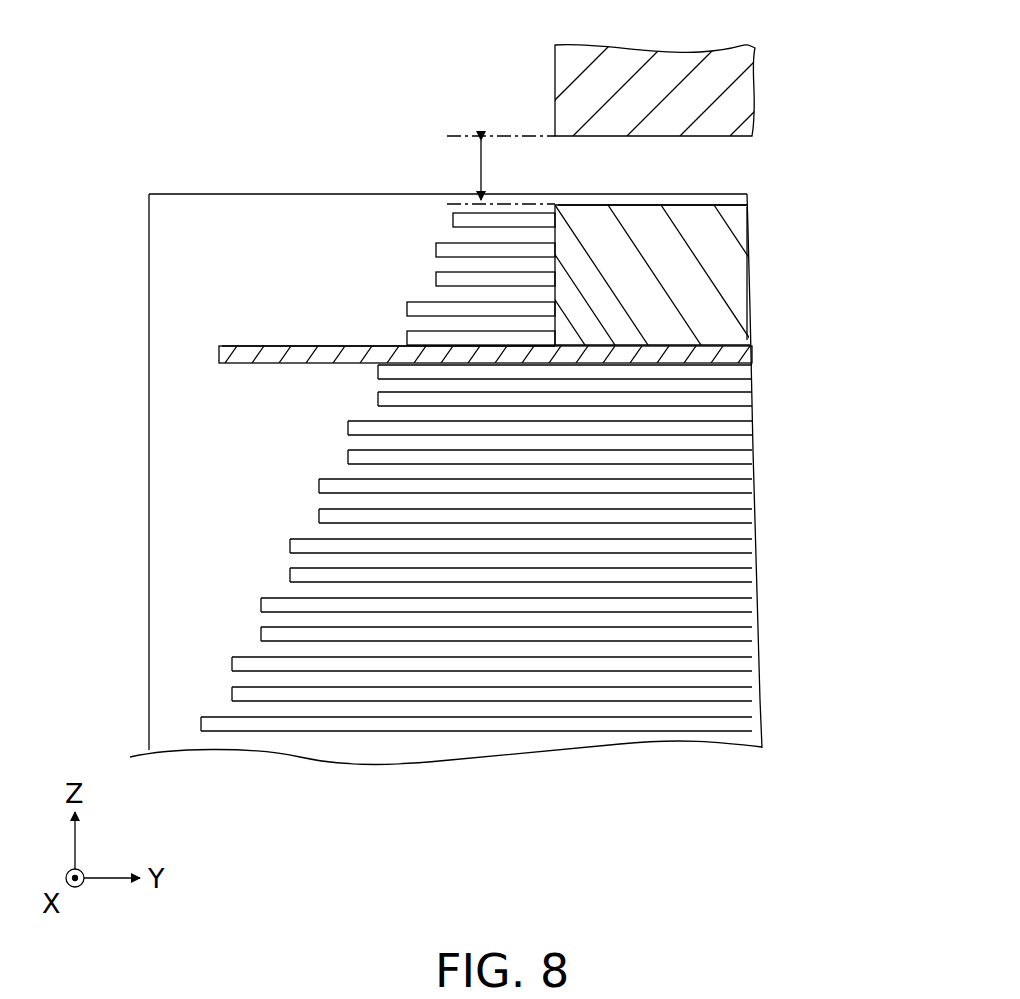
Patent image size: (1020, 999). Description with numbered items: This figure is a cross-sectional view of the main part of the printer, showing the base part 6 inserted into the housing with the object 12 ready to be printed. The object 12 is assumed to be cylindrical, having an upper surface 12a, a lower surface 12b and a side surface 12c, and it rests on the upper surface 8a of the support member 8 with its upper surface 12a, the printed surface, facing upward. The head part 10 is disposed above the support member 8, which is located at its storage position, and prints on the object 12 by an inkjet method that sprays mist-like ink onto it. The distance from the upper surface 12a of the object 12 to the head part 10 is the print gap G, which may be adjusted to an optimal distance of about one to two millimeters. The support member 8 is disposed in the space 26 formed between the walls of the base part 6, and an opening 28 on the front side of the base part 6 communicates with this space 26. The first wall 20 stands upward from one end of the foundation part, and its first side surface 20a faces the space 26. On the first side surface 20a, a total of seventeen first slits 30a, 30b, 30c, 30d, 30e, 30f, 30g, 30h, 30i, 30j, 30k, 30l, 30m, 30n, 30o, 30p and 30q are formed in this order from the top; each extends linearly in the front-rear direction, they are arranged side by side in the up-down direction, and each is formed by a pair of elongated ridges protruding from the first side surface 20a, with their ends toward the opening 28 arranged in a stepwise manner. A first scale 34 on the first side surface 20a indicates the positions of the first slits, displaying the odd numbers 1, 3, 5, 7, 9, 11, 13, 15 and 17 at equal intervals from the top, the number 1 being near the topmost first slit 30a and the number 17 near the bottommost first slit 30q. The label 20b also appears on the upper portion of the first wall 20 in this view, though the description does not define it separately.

The base part 6 is at (407, 103).
The head part 10 is at (570, 68).
The print gap G is at (501, 170).
The object 12 is at (728, 244).
The upper surface of the object 12a is at (688, 204).
The lower surface of the object 12b is at (753, 333).
The side surface of the object 12c is at (749, 207).
The support member 8 is at (422, 319).
The upper surface of the support member 8a is at (262, 346).
The first wall 20 is at (409, 444).
The first side surface 20a is at (175, 486).
The top wall of housing 20b is at (216, 193).
The space 26 is at (257, 428).
The opening 28 is at (175, 575).
The first scale 34 is at (220, 511).
The number 1 of the first scale 1 is at (428, 233).
The number 3 of the first scale 3 is at (398, 295).
The number 5 of the first scale 5 is at (375, 353).
The number 7 of the first scale 7 is at (340, 413).
The number 9 of the first scale 9 is at (312, 471).
The number 11 of the first scale 11 is at (283, 531).
The number 13 of the first scale 13 is at (255, 590).
The number 15 of the first scale 15 is at (228, 648).
The number 17 of the first scale 17 is at (200, 706).
The first slit 30a is at (543, 235).
The first slit 30b is at (543, 264).
The first slit 30c is at (543, 294).
The first slit 30d is at (543, 324).
The first slit 30e is at (755, 352).
The first slit 30f is at (745, 386).
The first slit 30g is at (745, 414).
The first slit 30h is at (745, 442).
The first slit 30i is at (745, 472).
The first slit 30j is at (745, 501).
The first slit 30k is at (745, 531).
The first slit 30l is at (745, 560).
The first slit 30m is at (745, 590).
The first slit 30n is at (745, 620).
The first slit 30o is at (745, 649).
The first slit 30p is at (745, 679).
The first slit 30q is at (745, 709).